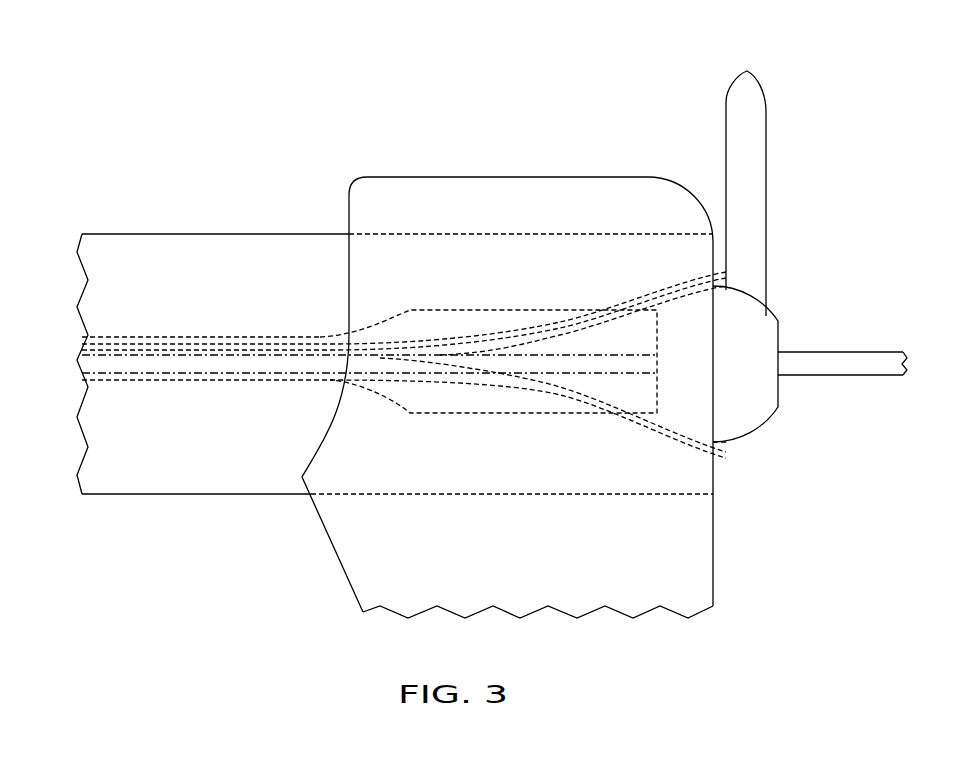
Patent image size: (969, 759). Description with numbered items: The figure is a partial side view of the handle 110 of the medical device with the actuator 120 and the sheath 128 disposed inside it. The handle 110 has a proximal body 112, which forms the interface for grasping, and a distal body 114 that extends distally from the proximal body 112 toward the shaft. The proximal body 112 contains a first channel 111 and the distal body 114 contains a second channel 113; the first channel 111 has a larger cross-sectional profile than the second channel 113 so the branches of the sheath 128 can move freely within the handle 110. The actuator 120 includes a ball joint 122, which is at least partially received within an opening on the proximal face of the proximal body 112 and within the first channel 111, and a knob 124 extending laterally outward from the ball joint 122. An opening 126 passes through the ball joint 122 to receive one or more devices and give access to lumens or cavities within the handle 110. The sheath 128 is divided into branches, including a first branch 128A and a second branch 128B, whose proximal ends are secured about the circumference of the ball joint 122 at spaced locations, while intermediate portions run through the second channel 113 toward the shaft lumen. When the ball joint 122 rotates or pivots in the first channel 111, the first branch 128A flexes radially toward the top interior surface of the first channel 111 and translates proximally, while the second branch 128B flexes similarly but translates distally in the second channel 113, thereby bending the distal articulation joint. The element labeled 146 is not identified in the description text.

The handle 110 is at (102, 71).
The first channel 111 is at (422, 308).
The proximal body 112 is at (710, 515).
The second channel 113 is at (155, 386).
The distal body 114 is at (207, 248).
The actuator 120 is at (840, 40).
The ball joint 122 is at (772, 315).
The knob 124 is at (766, 160).
The opening 126 is at (828, 434).
The sheath 128 is at (80, 361).
The first branch 128A is at (528, 301).
The second branch 128B is at (528, 425).
The output wire 146 is at (865, 357).